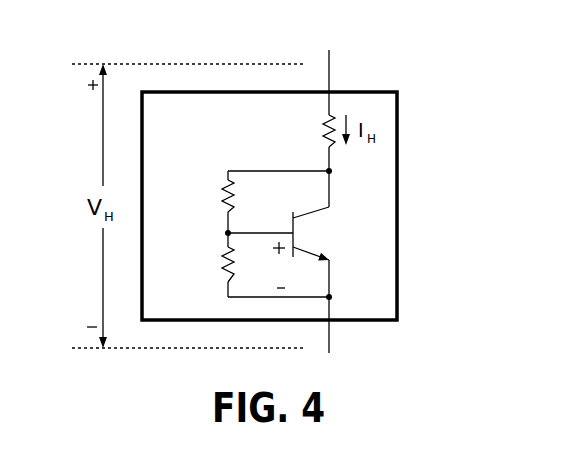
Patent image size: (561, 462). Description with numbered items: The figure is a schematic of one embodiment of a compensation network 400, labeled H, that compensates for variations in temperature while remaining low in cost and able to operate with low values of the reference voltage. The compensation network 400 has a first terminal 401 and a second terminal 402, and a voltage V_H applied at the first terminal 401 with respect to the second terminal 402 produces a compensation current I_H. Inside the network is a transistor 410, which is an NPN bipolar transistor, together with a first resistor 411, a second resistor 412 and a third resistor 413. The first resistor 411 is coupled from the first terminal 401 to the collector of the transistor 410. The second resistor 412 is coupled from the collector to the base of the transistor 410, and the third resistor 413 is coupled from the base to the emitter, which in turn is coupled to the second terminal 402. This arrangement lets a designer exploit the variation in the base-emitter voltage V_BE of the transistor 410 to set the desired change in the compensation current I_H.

The compensation network 400 is at (410, 204).
The first terminal 401 is at (334, 60).
The second terminal 402 is at (338, 344).
The transistor 410 is at (313, 234).
The first resistor 411 is at (315, 119).
The second resistor 412 is at (214, 178).
The third resistor 413 is at (220, 278).